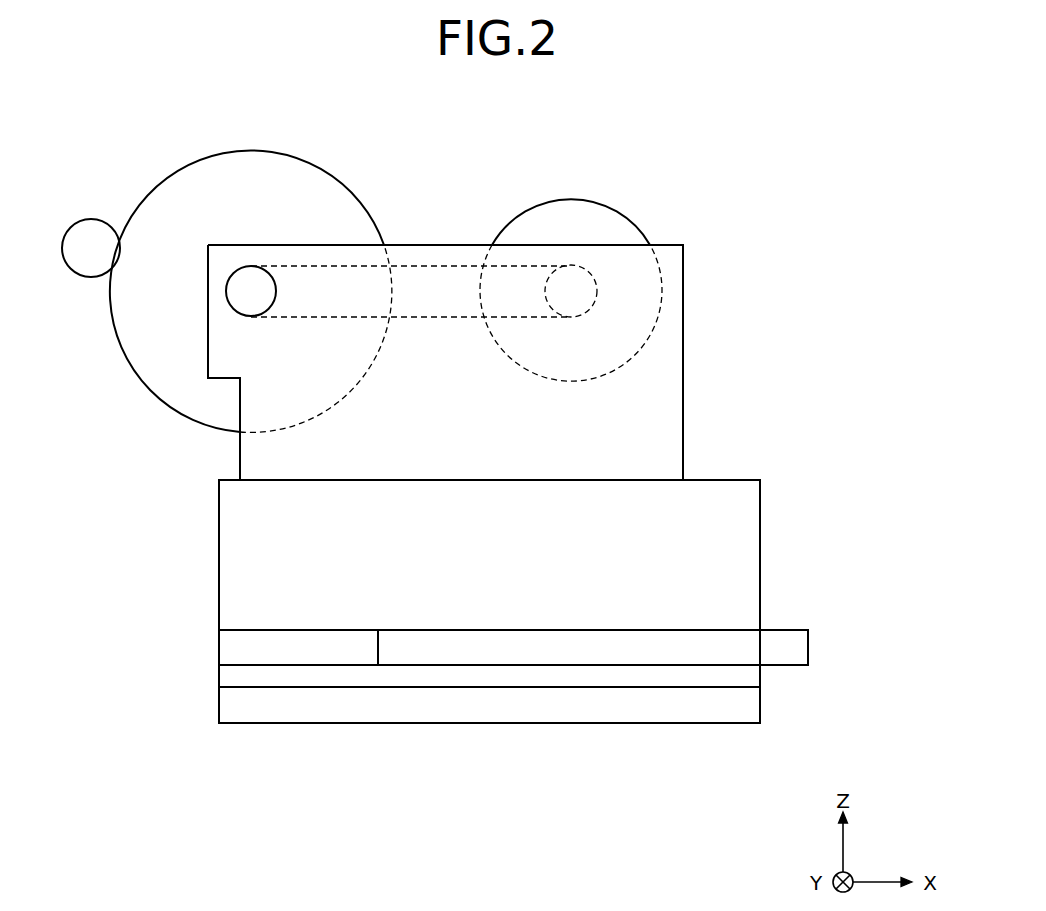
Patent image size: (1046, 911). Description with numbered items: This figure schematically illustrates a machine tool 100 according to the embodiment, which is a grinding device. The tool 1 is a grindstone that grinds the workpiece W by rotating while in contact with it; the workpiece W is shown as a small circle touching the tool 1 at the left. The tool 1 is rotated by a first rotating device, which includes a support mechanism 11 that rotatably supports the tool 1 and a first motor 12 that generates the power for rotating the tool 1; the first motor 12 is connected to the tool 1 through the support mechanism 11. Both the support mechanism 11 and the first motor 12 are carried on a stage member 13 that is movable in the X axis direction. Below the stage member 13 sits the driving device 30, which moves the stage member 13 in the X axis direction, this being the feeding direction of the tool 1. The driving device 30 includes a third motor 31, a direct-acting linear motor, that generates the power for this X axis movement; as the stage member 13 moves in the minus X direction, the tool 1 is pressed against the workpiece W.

The tool 1 is at (252, 150).
The workpiece W is at (90, 232).
The support mechanism 11 is at (333, 242).
The first motor 12 is at (570, 200).
The stage member 13 is at (742, 477).
The driving device 30 is at (786, 625).
The third motor 31 is at (676, 628).
The machine tool 100 is at (742, 196).